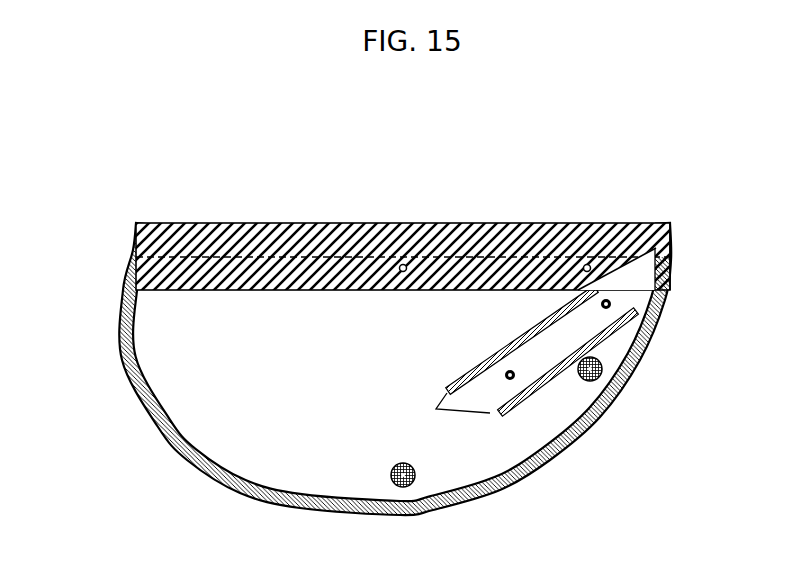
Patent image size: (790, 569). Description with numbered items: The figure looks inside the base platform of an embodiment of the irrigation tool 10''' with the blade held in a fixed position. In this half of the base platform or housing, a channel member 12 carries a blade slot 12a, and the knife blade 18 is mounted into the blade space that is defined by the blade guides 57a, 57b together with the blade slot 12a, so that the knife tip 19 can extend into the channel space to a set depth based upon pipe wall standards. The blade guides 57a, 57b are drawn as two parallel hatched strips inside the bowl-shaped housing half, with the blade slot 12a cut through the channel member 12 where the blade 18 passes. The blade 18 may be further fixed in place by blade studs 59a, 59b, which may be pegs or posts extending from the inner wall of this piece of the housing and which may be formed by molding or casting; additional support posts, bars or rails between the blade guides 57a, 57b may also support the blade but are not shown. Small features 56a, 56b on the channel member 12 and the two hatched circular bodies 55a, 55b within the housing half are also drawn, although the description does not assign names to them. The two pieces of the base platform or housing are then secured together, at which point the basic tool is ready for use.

The irrigation tool 10''' is at (352, 324).
The channel member 12 is at (228, 272).
The blade slot 12a is at (668, 268).
The knife blade 18 is at (627, 287).
The knife tip 19 is at (628, 250).
The first pivot point 56a is at (403, 264).
The second pivot point 56b is at (586, 264).
The blade guide 57a is at (485, 375).
The blade guide 57b is at (514, 407).
The blade stud 59a is at (611, 305).
The blade stud 59b is at (514, 379).
The first weight 55a is at (602, 377).
The second weight 55b is at (397, 486).